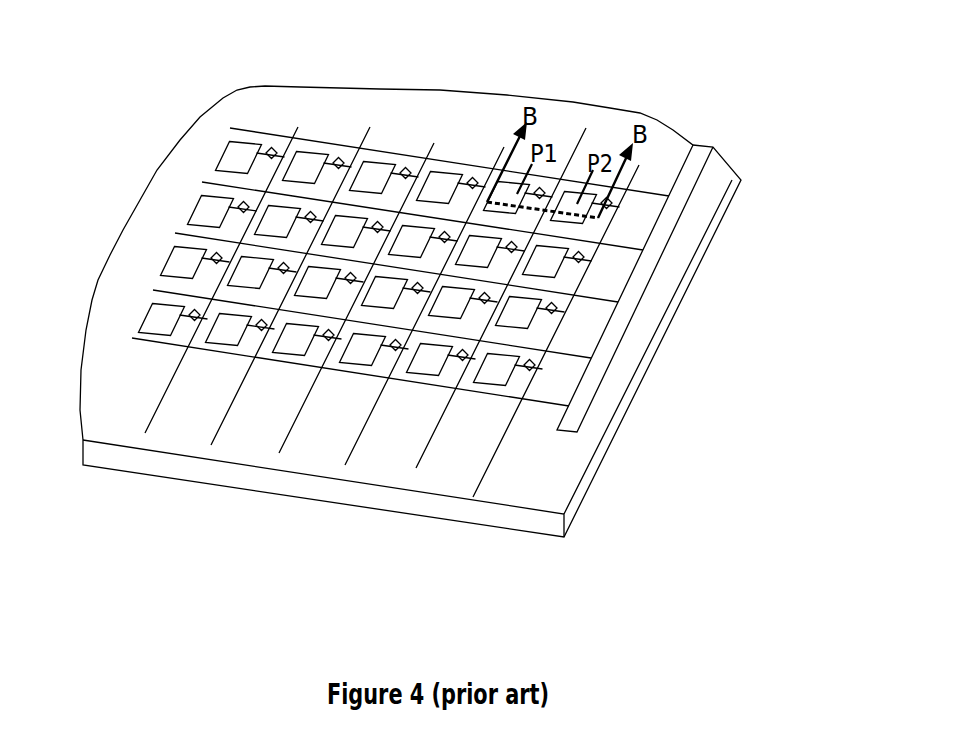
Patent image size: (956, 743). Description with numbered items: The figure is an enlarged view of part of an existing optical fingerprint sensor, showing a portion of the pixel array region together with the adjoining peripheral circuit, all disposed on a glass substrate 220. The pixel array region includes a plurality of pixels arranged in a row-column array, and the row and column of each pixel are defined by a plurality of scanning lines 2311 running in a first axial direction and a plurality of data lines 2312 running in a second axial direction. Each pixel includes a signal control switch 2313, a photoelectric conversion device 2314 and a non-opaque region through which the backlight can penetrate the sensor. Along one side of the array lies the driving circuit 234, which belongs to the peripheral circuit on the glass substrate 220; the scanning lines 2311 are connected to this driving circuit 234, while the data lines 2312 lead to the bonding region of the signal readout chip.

The glass substrate 220 is at (545, 477).
The driving circuit 234 is at (643, 268).
The scanning lines 2311 is at (457, 160).
The data lines 2312 is at (363, 138).
The signal control switch 2313 is at (533, 368).
The photoelectric conversion device 2314 is at (498, 372).